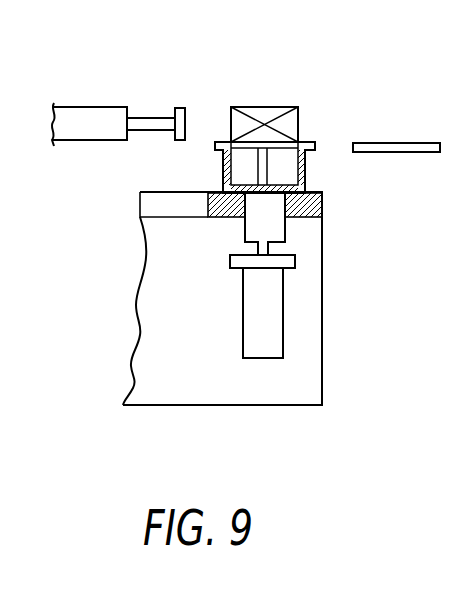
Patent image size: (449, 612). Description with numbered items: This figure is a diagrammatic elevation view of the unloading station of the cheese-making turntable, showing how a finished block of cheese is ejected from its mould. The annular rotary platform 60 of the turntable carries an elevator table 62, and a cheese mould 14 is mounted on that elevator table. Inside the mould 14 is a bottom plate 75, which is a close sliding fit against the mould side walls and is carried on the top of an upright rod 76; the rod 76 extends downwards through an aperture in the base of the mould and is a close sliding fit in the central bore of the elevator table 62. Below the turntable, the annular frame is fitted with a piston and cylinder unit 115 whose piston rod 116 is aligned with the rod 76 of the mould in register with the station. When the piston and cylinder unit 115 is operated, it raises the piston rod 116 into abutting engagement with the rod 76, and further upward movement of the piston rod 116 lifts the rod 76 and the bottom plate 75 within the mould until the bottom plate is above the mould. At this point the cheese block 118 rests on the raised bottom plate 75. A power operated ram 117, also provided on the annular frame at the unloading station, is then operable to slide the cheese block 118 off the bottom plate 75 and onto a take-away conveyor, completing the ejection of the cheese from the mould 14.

The cheese mould 14 is at (224, 174).
The annular rotary platform 60 is at (219, 216).
The elevator table 62 is at (286, 228).
The bottom plate 75 is at (231, 152).
The upright rod 76 is at (298, 173).
The piston and cylinder unit 115 is at (270, 320).
The piston rod 116 is at (266, 250).
The power operated ram 117 is at (94, 114).
The cheese block 118 is at (259, 105).